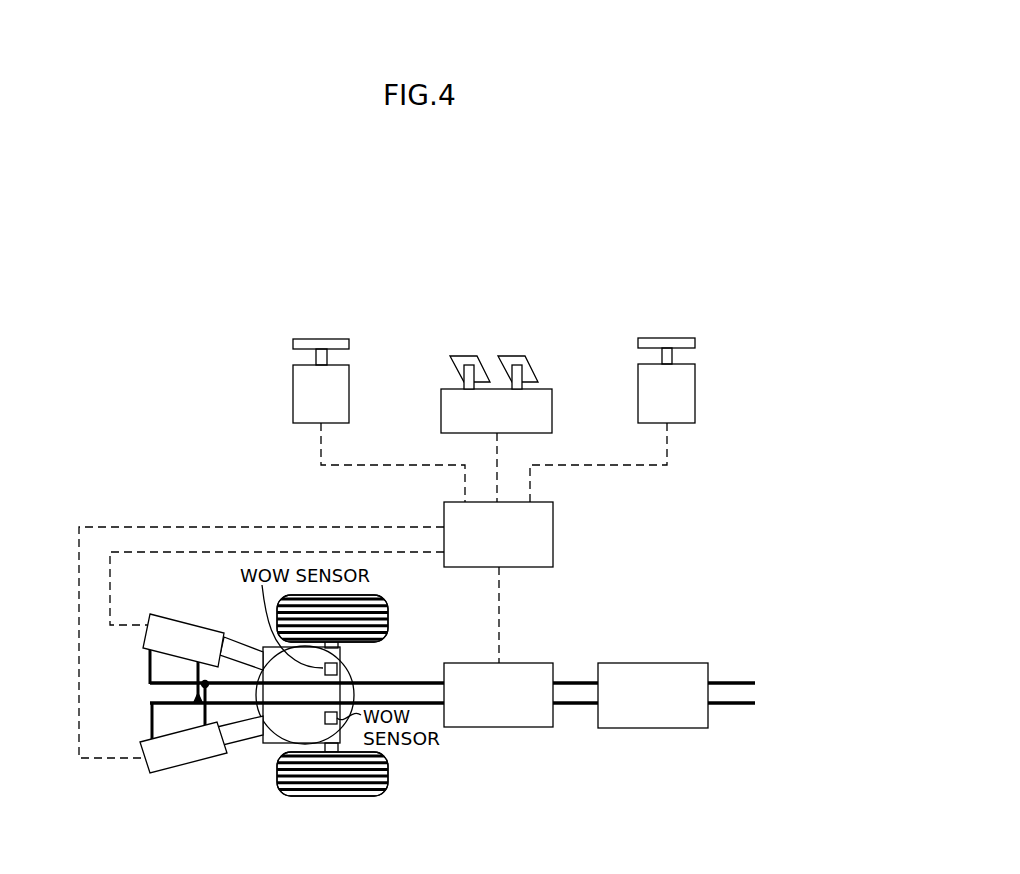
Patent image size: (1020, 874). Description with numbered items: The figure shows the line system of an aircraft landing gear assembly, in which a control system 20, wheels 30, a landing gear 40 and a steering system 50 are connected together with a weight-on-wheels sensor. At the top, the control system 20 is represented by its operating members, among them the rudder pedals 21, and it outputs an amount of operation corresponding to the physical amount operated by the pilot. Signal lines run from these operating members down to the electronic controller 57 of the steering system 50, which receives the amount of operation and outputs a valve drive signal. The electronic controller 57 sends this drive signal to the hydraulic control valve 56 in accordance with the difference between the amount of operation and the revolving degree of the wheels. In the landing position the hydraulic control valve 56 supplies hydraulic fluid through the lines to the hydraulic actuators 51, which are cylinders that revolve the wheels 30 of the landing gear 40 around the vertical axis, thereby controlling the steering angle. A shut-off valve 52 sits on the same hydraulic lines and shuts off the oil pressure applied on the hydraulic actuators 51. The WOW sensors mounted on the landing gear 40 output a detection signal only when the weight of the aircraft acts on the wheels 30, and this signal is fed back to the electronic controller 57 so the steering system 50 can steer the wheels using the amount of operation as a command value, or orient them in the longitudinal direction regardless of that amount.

The control system 20 is at (495, 225).
The rudder pedals 21 is at (322, 330).
The wheels 30 is at (393, 622).
The landing gear 40 is at (353, 672).
The steering system 50 is at (230, 425).
The hydraulic actuators 51 is at (192, 627).
The shut-off valve 52 is at (633, 660).
The hydraulic control valve 56 is at (542, 660).
The electronic controller 57 is at (562, 525).